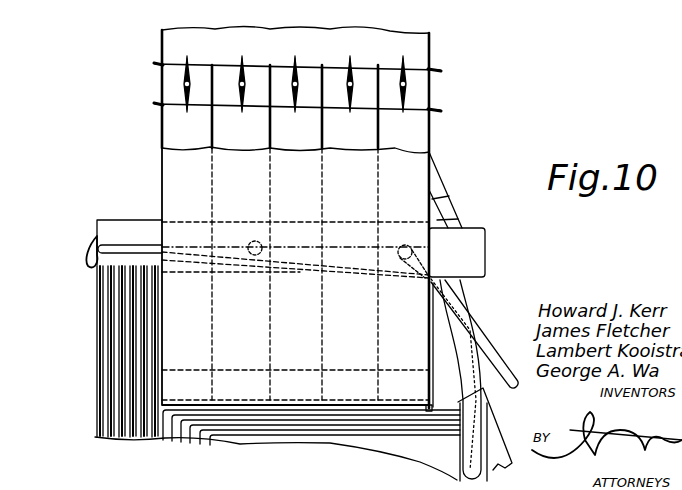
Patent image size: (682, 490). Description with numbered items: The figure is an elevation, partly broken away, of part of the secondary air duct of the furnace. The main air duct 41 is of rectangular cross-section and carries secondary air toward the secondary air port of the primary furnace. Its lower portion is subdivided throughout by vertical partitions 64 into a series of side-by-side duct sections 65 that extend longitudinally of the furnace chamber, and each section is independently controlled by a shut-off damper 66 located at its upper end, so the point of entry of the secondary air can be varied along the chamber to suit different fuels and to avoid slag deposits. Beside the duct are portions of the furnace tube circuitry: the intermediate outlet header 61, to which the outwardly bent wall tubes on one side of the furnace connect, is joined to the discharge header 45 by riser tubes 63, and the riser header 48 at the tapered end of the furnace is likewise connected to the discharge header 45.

The main air duct 41 is at (430, 135).
The discharge header 45 is at (473, 248).
The riser header 48 is at (495, 432).
The intermediate outlet header 61 is at (460, 447).
The riser tubes 63 is at (475, 367).
The vertical partitions 64 is at (268, 132).
The duct sections 65 is at (305, 141).
The shut-off damper 66 is at (295, 62).